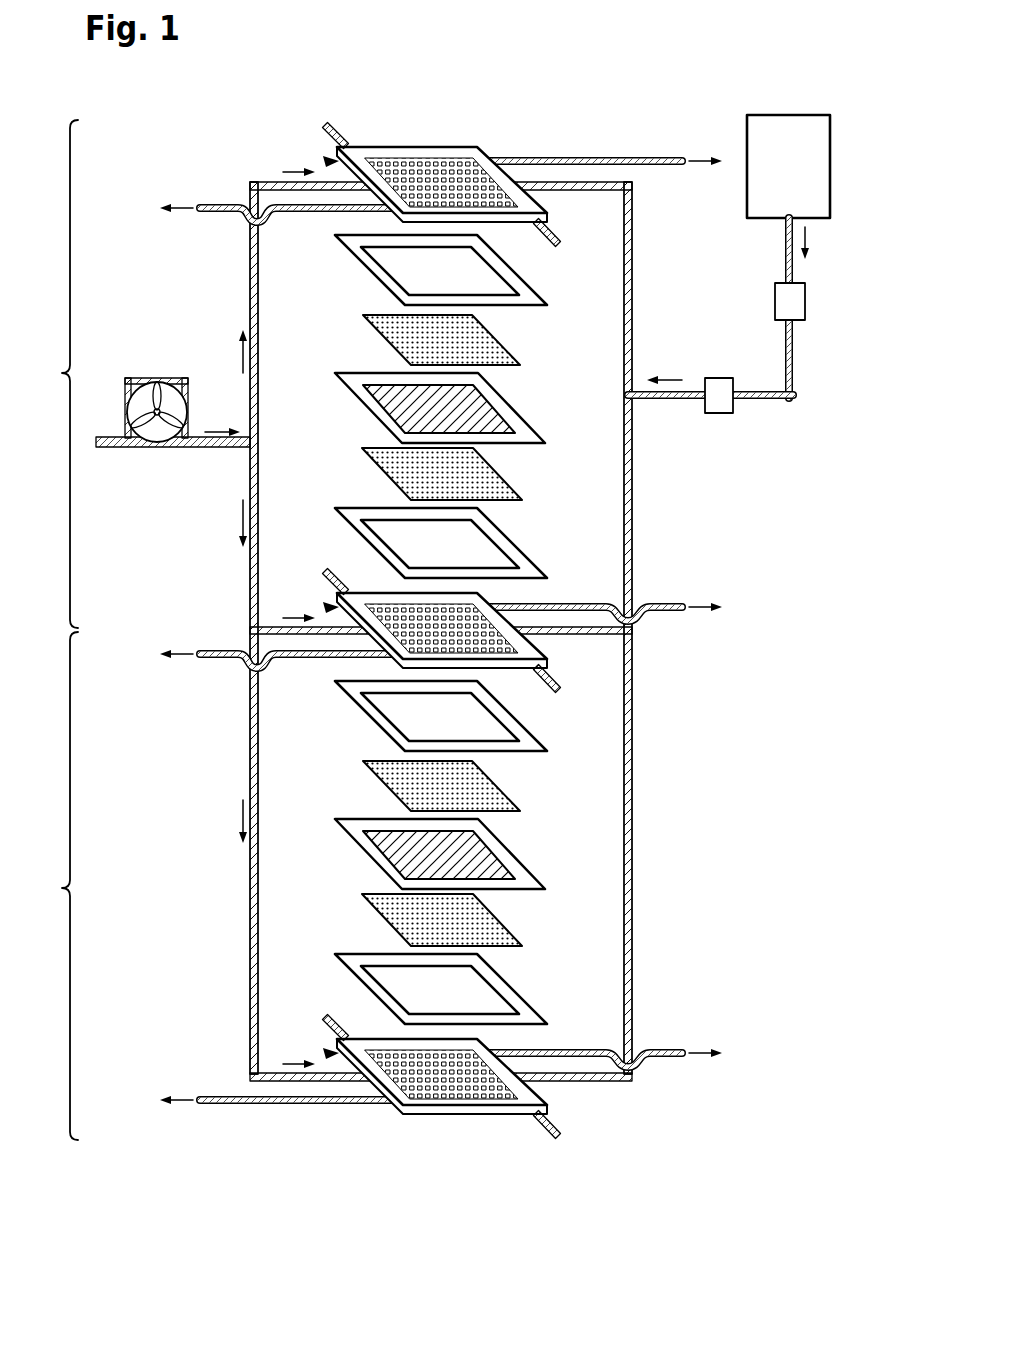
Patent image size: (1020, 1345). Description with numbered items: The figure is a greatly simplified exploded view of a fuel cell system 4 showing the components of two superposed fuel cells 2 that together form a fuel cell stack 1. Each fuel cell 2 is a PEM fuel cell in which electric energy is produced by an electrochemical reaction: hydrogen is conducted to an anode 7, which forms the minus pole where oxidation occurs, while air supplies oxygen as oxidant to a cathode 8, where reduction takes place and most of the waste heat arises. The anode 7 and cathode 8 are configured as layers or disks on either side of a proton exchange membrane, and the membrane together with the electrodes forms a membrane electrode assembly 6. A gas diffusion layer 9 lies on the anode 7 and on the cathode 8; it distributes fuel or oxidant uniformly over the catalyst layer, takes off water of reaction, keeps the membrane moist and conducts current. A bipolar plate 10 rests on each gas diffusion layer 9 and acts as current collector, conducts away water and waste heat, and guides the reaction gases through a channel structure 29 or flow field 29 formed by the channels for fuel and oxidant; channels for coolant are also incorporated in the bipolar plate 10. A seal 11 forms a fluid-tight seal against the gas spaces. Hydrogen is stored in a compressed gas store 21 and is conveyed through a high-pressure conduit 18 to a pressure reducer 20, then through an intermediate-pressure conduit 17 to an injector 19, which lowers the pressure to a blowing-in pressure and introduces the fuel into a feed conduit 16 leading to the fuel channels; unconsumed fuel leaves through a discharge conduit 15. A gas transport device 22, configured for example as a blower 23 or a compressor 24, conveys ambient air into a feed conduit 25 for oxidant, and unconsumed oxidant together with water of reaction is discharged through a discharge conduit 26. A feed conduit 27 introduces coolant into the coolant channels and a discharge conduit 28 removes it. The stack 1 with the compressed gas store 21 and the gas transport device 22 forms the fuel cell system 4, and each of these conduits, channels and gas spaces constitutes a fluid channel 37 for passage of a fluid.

The fuel cell stack 1 is at (519, 714).
The fuel cell 2 is at (58, 630).
The fuel cell system 4 is at (735, 1166).
The membrane electrode assembly 6 is at (372, 409).
The anode 7 is at (431, 661).
The cathode 8 is at (482, 389).
The gas diffusion layer 9 is at (385, 342).
The bipolar plate 10 is at (324, 159).
The seal 11 is at (375, 276).
The discharge conduit for fuel 15 is at (225, 214).
The feed conduit for fuel 16 is at (633, 340).
The intermediate-pressure conduit 17 is at (776, 401).
The high-pressure conduit 18 is at (784, 250).
The injector 19 is at (720, 414).
The pressure reducer 20 is at (774, 305).
The compressed gas store 21 is at (787, 114).
The gas transport device 22 is at (173, 374).
The blower 23 is at (173, 374).
The compressor 24 is at (139, 377).
The feed conduit for oxidant 25 is at (259, 307).
The discharge conduit for oxidant 26 is at (613, 157).
The feed conduit for coolant 27 is at (325, 121).
The discharge conduit for coolant 28 is at (557, 248).
The channel structure 29 is at (422, 160).
The fluid channel 37 is at (477, 630).